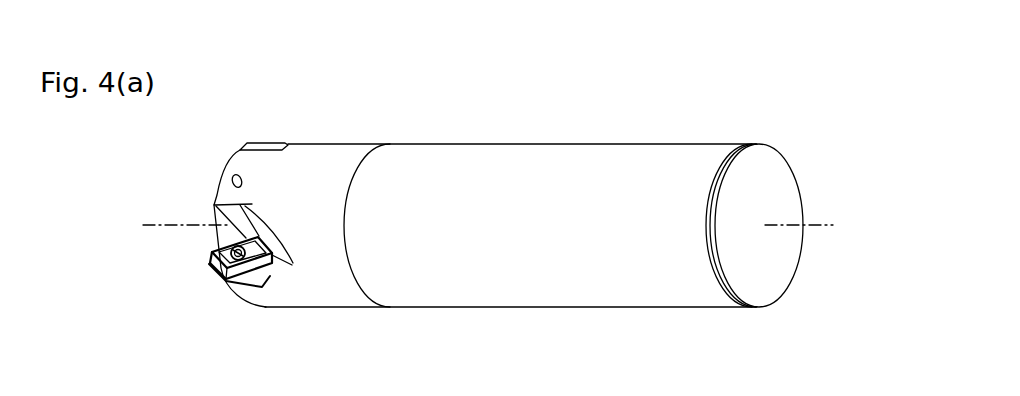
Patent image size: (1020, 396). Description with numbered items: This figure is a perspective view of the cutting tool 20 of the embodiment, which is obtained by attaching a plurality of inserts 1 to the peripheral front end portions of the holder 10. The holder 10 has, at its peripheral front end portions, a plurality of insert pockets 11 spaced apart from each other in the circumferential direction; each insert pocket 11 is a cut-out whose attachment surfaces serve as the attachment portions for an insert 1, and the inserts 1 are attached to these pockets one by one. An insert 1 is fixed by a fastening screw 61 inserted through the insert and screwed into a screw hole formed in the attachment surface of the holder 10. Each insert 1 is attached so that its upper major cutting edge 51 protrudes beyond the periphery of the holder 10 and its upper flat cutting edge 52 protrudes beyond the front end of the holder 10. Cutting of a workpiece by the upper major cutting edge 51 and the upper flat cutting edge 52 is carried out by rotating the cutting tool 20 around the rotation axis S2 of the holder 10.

The insert 1 is at (263, 134).
The holder 10 is at (478, 136).
The insert pocket 11 is at (277, 267).
The cutting tool 20 is at (497, 52).
The upper major cutting edge 51 is at (229, 278).
The upper flat cutting edge 52 is at (215, 259).
The fastening screw 61 is at (330, 227).
The rotation axis S2 is at (172, 222).